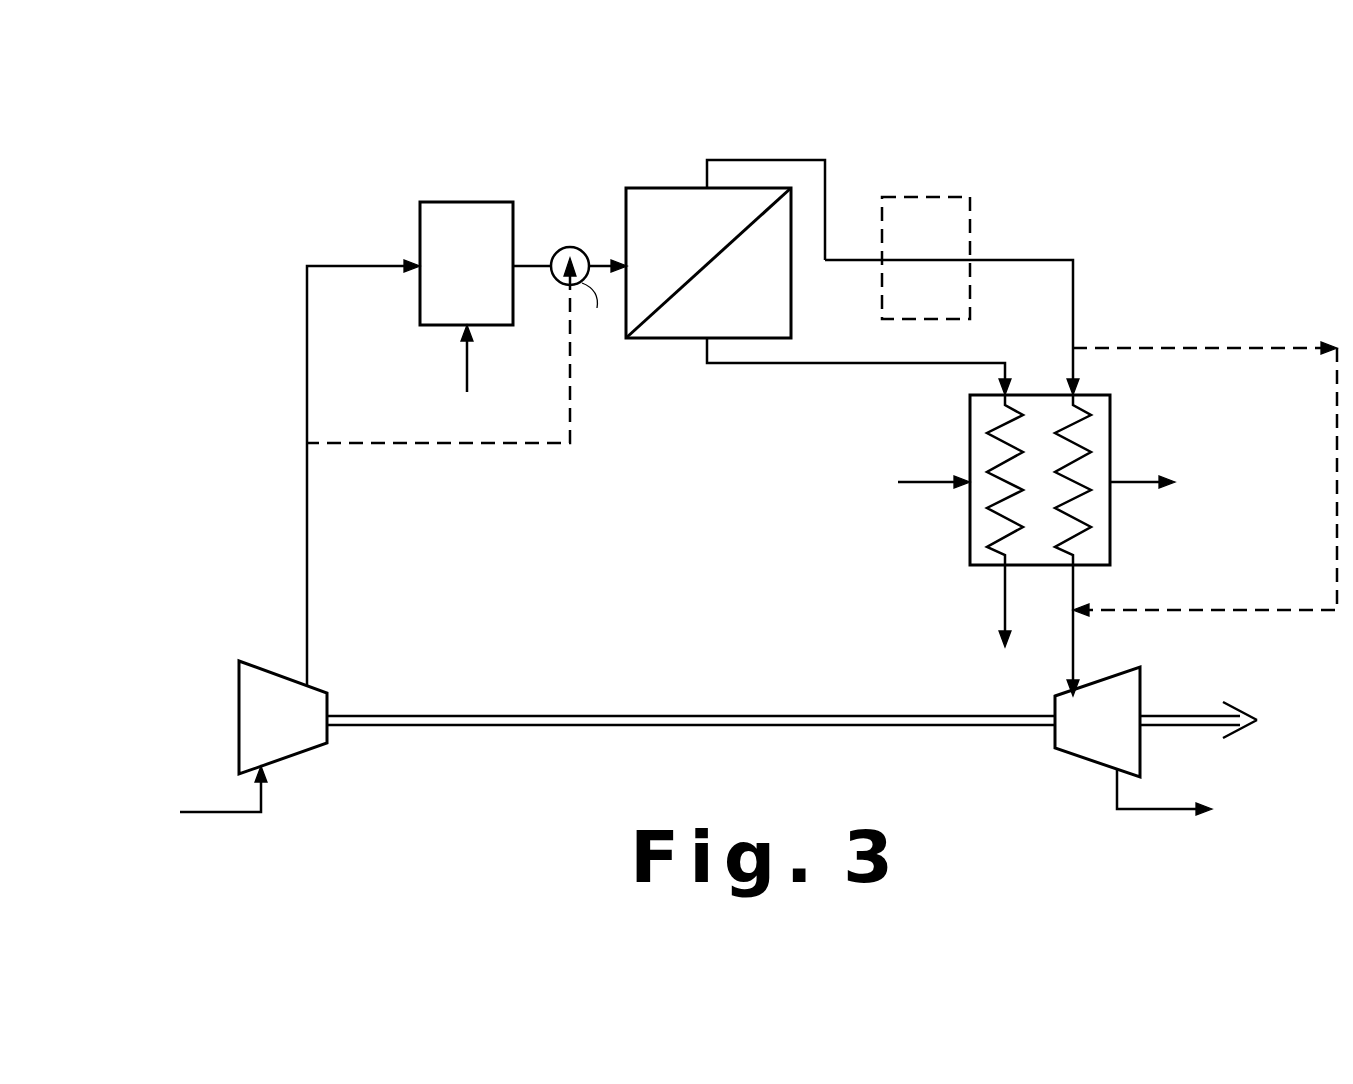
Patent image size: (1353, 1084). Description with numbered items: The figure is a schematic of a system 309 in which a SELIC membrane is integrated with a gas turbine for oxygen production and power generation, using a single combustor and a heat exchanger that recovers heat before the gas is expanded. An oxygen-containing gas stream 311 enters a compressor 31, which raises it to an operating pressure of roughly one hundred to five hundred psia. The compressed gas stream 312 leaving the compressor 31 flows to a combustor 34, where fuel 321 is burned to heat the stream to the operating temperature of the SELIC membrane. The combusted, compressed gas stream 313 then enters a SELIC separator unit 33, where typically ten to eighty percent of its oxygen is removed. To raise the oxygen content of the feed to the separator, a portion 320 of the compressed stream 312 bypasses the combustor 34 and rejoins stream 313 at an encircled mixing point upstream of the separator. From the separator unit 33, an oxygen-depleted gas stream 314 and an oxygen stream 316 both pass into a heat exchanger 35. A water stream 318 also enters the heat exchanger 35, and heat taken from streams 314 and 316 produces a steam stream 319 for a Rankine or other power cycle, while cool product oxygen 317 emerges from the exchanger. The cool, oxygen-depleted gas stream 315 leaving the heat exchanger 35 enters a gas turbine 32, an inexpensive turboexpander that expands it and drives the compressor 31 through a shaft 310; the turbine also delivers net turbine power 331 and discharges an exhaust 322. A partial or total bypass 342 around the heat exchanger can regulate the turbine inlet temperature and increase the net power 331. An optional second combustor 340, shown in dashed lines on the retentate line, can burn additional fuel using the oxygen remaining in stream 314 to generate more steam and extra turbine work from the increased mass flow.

The compressor 31 is at (296, 737).
The gas turbine 32 is at (1114, 737).
The SELIC separator unit 33 is at (709, 246).
The combustor 34 is at (480, 281).
The heat exchanger 35 is at (1111, 436).
The system 309 is at (1022, 248).
The shaft 310 is at (508, 727).
The gas stream 311 is at (263, 800).
The compressed gas stream 312 is at (308, 545).
The combusted, compressed gas stream 313 is at (540, 267).
The oxygen-depleted gas stream 314 is at (707, 158).
The cool, oxygen-depleted gas stream 315 is at (1074, 648).
The oxygen stream 316 is at (773, 365).
The cool product oxygen 317 is at (1003, 607).
The water stream 318 is at (925, 481).
The steam stream 319 is at (1140, 487).
The portion of feed stream 320 is at (455, 445).
The fuel 321 is at (468, 355).
The turbine exhaust line 322 is at (1157, 810).
The net turbine power 331 is at (1190, 715).
The second, optional combustor 340 is at (922, 197).
The partial or total bypass 342 is at (1117, 343).